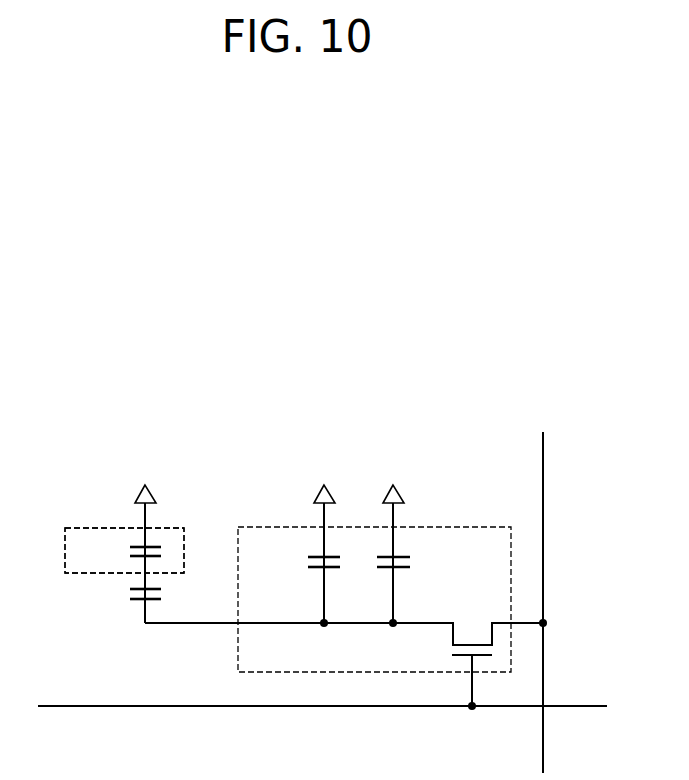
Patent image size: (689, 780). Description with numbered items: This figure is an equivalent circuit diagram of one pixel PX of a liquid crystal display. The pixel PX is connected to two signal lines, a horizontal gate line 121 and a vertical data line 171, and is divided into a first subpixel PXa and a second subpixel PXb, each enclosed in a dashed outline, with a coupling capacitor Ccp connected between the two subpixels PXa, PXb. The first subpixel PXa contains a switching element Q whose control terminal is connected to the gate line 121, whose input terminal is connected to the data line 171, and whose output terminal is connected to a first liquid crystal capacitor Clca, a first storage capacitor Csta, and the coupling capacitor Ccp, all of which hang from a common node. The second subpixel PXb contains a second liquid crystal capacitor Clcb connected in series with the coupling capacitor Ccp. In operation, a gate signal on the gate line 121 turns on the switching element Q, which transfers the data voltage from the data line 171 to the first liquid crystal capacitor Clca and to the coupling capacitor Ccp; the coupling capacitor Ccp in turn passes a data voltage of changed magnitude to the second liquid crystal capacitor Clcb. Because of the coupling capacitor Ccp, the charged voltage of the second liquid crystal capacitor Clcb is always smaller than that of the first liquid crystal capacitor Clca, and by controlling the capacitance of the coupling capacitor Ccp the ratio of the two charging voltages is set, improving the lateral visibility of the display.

The gate line 121 is at (70, 703).
The data line 171 is at (543, 466).
The pixel PX is at (280, 452).
The first subpixel PXa is at (288, 672).
The second subpixel PXb is at (174, 574).
The switching element Q is at (472, 628).
The second liquid crystal capacitor Clcb is at (124, 550).
The coupling capacitor Ccp is at (120, 595).
The first storage capacitor Csta is at (299, 562).
The first liquid crystal capacitor Clca is at (418, 565).